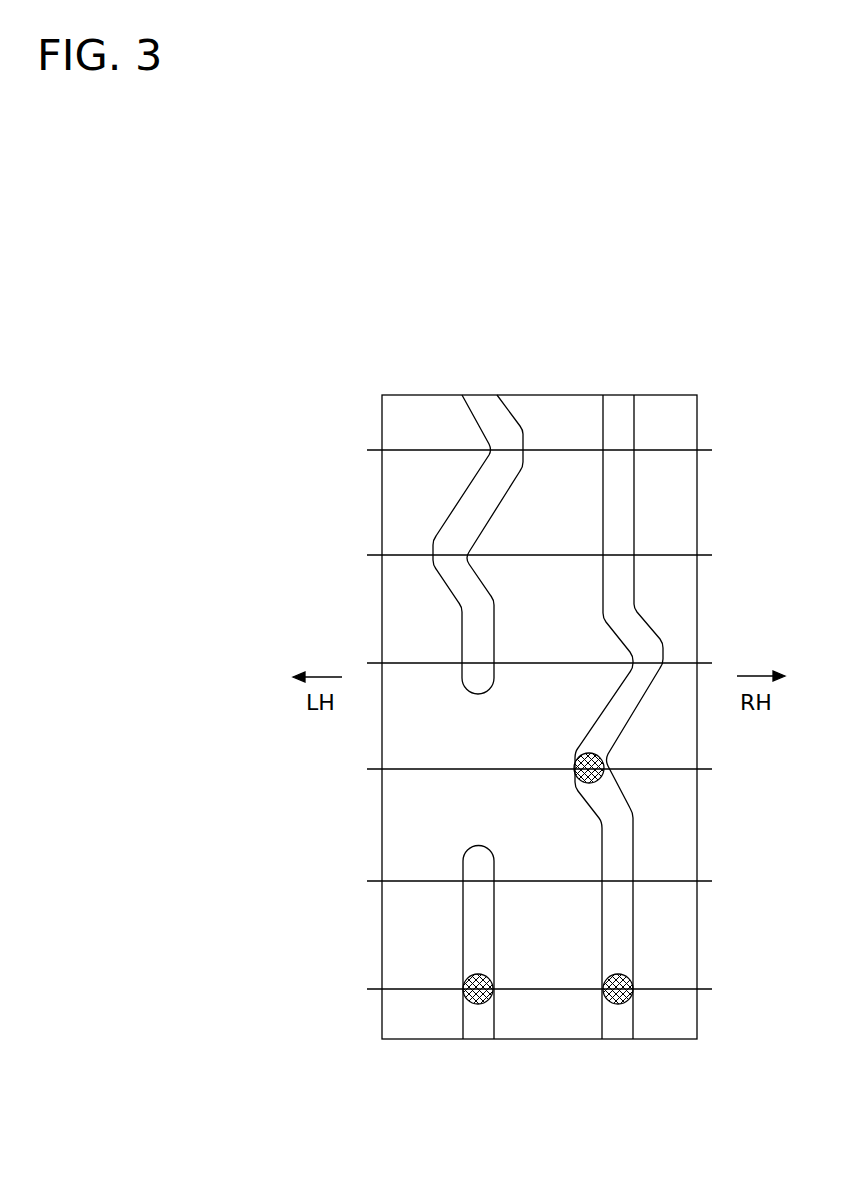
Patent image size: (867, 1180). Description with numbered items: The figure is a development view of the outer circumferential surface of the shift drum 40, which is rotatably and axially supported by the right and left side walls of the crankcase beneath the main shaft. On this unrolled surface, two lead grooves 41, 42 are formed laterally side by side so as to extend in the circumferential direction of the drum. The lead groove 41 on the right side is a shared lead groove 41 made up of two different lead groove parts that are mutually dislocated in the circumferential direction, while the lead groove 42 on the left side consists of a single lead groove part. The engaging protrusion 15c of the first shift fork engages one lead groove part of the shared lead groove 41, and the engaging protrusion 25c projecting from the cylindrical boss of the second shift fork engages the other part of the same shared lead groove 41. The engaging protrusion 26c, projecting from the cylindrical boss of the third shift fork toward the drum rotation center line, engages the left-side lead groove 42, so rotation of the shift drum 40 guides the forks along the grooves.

The shift drum 40 is at (363, 428).
The shared lead groove 41 is at (618, 1017).
The lead groove 42 is at (488, 418).
The engaging protrusion 15c is at (604, 760).
The engaging protrusion 25c is at (632, 977).
The engaging protrusion 26c is at (465, 977).